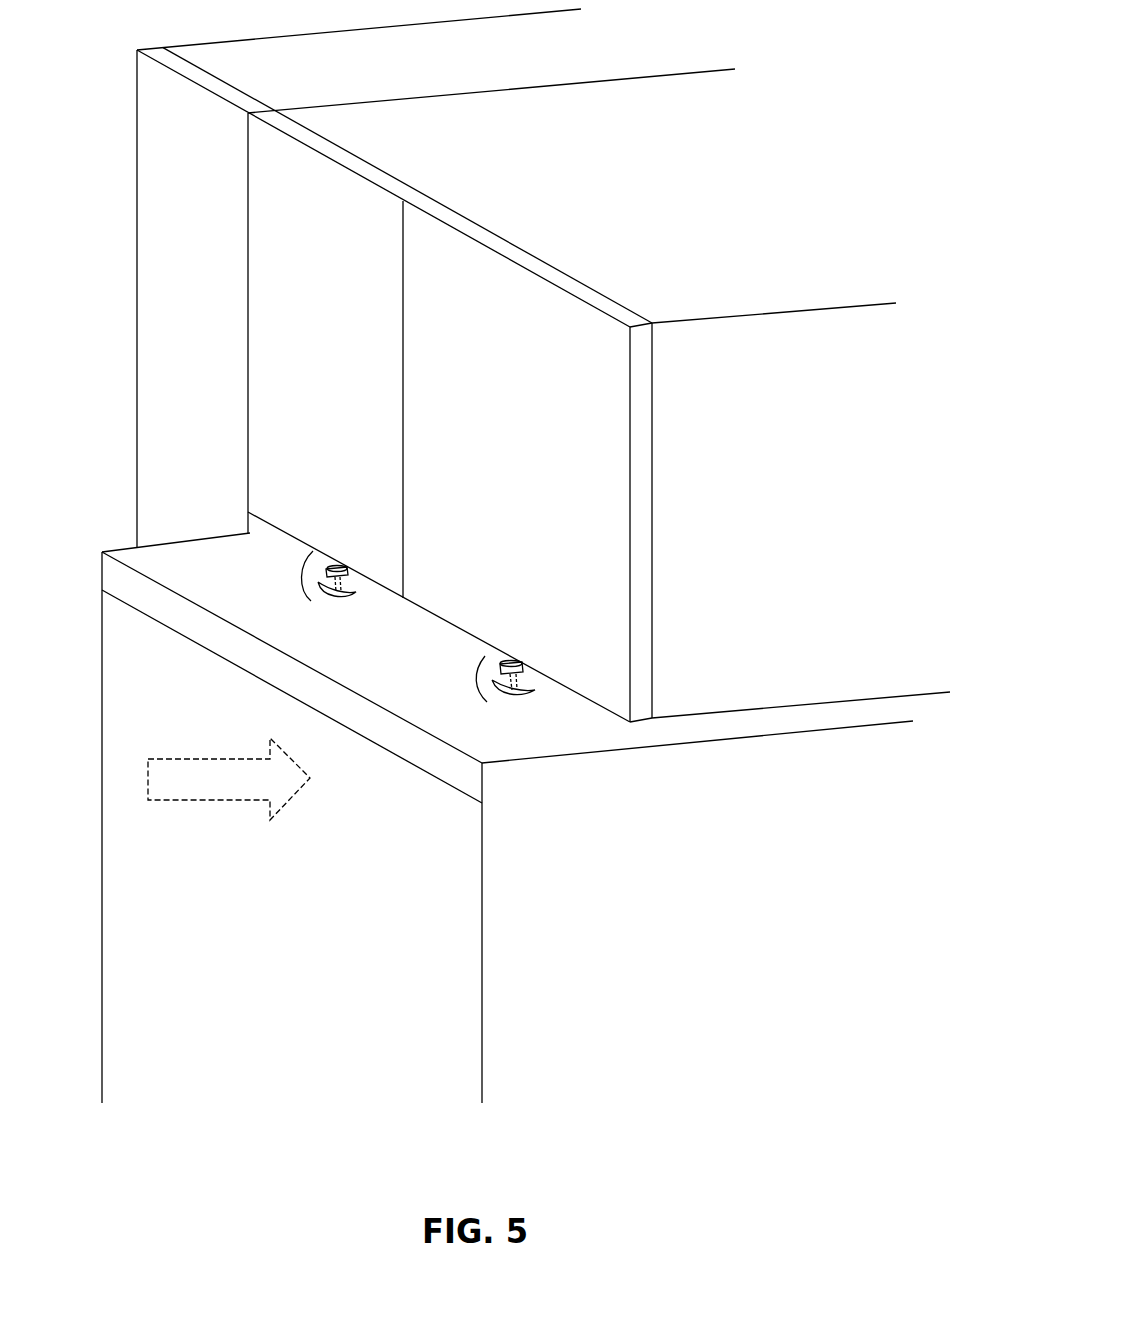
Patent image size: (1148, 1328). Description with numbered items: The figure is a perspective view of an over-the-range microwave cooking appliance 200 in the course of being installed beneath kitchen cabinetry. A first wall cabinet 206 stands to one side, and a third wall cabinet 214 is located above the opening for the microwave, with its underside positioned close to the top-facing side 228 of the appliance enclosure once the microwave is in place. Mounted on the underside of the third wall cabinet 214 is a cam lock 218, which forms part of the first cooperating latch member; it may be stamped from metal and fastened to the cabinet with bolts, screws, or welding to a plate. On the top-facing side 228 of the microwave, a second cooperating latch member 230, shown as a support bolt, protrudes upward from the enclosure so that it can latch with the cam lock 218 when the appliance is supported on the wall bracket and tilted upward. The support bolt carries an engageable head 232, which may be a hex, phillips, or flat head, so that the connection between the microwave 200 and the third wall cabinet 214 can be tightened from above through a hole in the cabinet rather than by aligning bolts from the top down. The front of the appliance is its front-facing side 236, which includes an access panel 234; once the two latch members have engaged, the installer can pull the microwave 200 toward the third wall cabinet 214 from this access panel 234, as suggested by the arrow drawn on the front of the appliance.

The over-the-range microwave cooking appliance 200 is at (122, 677).
The first wall cabinet 206 is at (148, 303).
The third wall cabinet 214 is at (495, 275).
The cam lock 218 is at (310, 557).
The top-facing side 228 is at (433, 640).
The second cooperating latch member 230 is at (340, 582).
The engageable head 232 is at (332, 576).
The access panel 234 is at (203, 633).
The front-facing side 236 is at (118, 733).